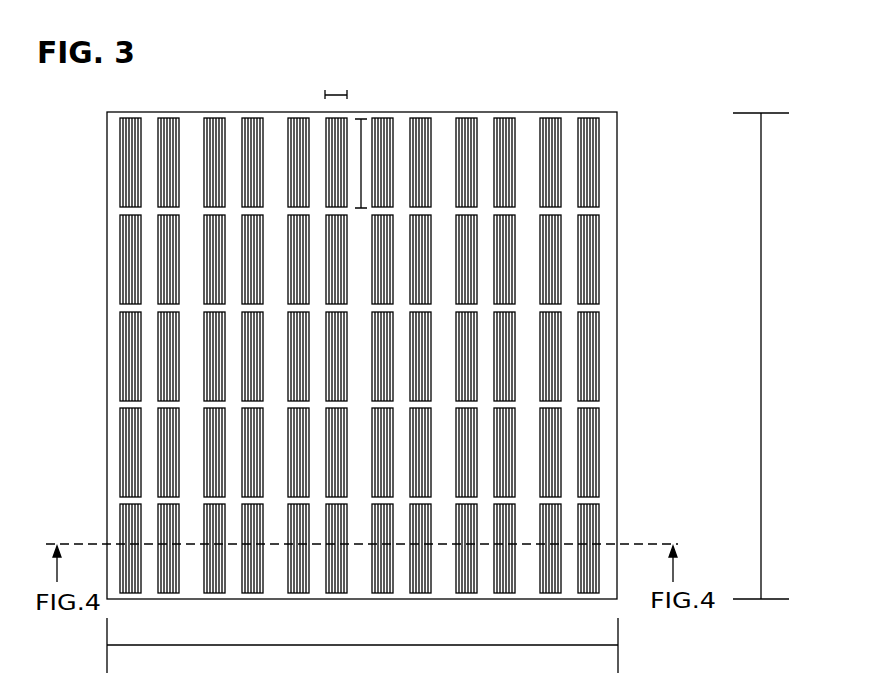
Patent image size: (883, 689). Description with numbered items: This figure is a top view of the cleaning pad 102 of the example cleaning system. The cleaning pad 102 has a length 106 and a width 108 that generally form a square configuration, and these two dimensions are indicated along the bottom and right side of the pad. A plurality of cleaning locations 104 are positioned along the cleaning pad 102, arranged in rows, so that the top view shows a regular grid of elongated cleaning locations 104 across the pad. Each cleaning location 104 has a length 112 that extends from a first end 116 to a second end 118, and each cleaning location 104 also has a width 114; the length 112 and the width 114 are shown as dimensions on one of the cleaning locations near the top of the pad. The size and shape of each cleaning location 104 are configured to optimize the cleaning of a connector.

The cleaning pad 102 is at (602, 349).
The cleaning location 104 is at (600, 150).
The length 106 is at (358, 647).
The width 108 is at (761, 350).
The length 112 is at (361, 132).
The width 114 is at (336, 89).
The first end 116 is at (328, 118).
The second end 118 is at (333, 211).